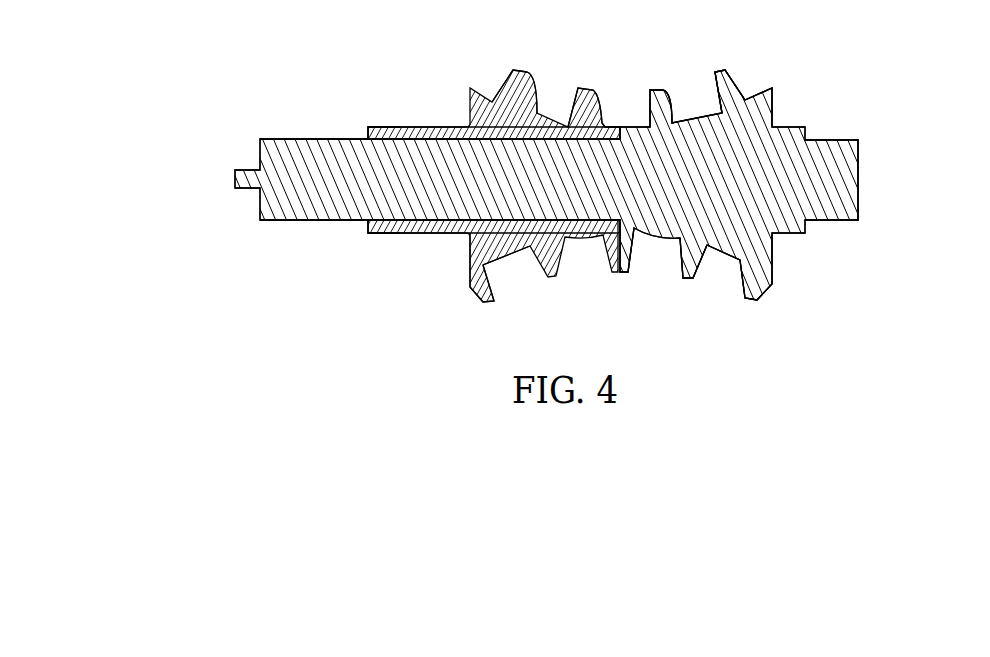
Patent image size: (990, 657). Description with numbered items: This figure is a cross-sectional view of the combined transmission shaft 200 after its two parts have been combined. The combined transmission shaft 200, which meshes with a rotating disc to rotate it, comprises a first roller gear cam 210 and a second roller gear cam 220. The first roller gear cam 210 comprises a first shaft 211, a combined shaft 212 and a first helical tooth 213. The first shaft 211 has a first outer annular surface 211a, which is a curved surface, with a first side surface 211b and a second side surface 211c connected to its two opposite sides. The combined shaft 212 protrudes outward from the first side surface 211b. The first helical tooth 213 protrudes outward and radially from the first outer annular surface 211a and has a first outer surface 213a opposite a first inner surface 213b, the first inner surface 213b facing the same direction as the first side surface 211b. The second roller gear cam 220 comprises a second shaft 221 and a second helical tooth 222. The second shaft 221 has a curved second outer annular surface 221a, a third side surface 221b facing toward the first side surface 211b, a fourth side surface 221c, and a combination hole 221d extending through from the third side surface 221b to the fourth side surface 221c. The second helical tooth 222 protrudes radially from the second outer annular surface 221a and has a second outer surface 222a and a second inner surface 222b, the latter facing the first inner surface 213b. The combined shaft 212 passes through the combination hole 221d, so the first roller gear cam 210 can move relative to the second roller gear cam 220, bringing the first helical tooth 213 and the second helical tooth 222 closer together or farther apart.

The combined transmission shaft 200 is at (969, 259).
The first roller gear cam 210 is at (850, 100).
The first shaft 211 is at (740, 188).
The first outer annular surface 211a is at (756, 88).
The first side surface 211b is at (615, 270).
The second side surface 211c is at (866, 161).
The combined shaft 212 is at (553, 200).
The first helical tooth 213 is at (755, 300).
The first outer surface 213a is at (706, 270).
The first inner surface 213b is at (676, 258).
The second roller gear cam 220 is at (412, 95).
The second shaft 221 is at (416, 236).
The second outer annular surface 221a is at (510, 267).
The third side surface 221b is at (622, 122).
The fourth side surface 221c is at (362, 130).
The combination hole 221d is at (363, 226).
The second helical tooth 222 is at (478, 300).
The second outer surface 222a is at (504, 80).
The second inner surface 222b is at (526, 98).